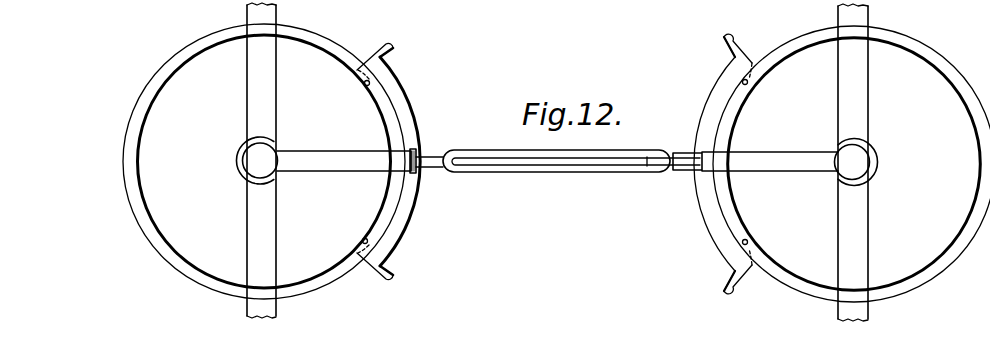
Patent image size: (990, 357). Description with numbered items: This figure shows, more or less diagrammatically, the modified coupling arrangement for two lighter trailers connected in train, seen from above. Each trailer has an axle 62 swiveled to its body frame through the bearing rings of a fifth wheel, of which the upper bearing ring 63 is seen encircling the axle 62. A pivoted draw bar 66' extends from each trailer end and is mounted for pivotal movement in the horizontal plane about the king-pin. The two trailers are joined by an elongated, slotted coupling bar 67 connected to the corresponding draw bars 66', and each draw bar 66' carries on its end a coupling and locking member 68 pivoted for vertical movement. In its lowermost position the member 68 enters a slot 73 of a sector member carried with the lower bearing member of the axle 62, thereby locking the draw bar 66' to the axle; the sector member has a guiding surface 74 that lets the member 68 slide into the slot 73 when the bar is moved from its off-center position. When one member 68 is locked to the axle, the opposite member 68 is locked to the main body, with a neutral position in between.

The axle 62 is at (266, 127).
The upper bearing ring 63 is at (313, 280).
The draw bar 66' is at (755, 147).
The coupling bar 67 is at (500, 168).
The coupling and locking member 68 is at (658, 167).
The slot 73 is at (420, 175).
The guiding surface 74 is at (408, 100).